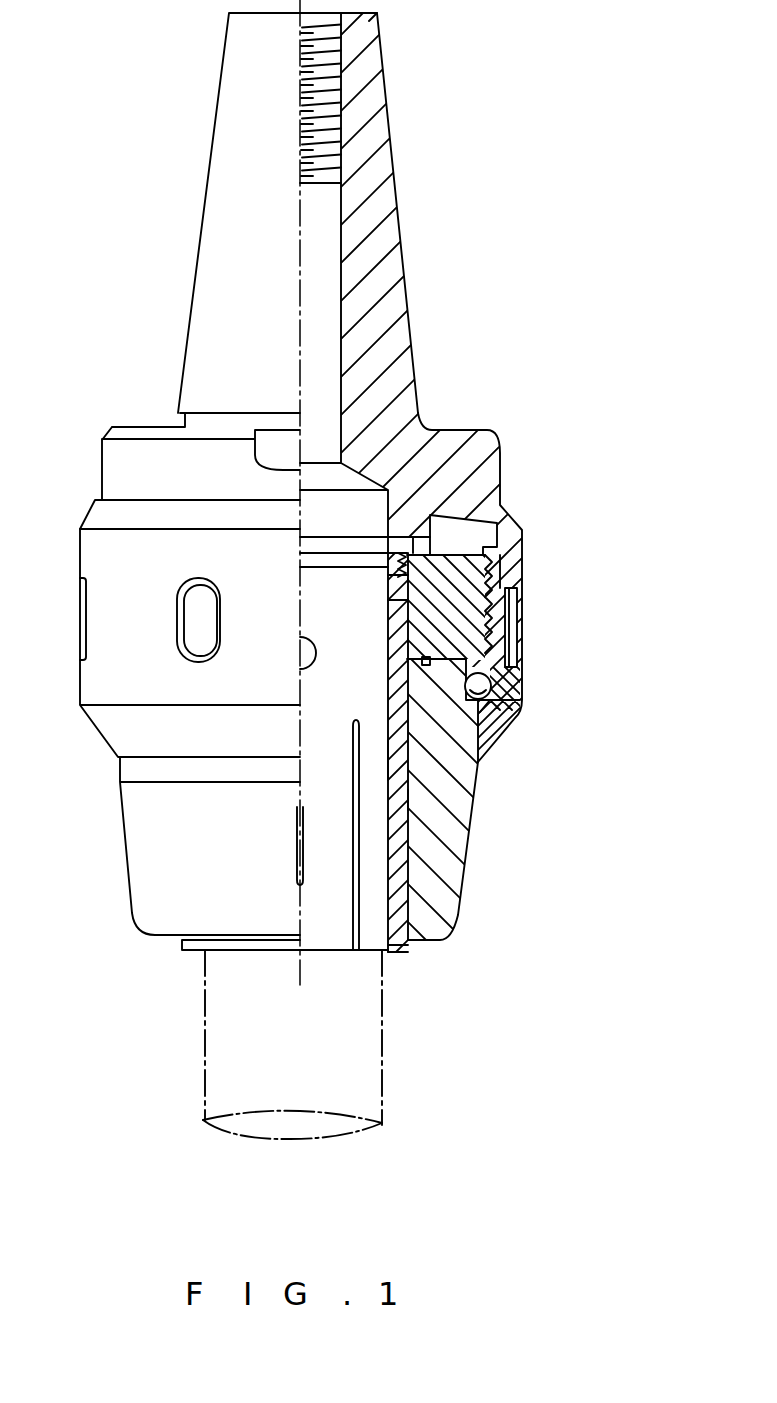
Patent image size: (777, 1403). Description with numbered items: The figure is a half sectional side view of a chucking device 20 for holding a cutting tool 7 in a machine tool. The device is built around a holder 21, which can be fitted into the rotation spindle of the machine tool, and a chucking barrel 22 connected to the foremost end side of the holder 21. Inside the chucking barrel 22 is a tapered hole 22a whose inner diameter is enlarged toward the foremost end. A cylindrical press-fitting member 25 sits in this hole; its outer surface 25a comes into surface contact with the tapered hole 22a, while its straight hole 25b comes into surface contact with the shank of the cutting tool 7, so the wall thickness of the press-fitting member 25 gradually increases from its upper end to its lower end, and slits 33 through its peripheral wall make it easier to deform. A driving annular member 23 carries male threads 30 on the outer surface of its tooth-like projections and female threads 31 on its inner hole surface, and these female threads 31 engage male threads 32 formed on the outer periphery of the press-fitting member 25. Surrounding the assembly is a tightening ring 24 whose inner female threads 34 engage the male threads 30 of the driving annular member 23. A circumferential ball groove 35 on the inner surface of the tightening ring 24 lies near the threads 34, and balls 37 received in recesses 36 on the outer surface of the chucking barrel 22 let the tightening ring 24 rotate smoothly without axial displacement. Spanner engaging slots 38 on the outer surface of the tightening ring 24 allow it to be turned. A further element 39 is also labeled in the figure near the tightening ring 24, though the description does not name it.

The cutting tool 7 is at (363, 1034).
The chucking device 20 is at (131, 390).
The holder 21 is at (404, 232).
The chucking barrel 22 is at (472, 852).
The tapered hole 22a is at (400, 760).
The driving annular member 23 is at (490, 568).
The tightening ring 24 is at (527, 540).
The press-fitting member 25 is at (400, 875).
The outer surface 25a is at (410, 798).
The straight hole 25b is at (378, 938).
The male threads 30 is at (518, 640).
The female threads 31 is at (396, 610).
The male threads 32 is at (392, 582).
The slits 33 is at (357, 826).
The female threads 34 is at (503, 600).
The ball groove 35 is at (507, 715).
The recesses 36 is at (490, 725).
The balls 37 is at (465, 686).
The spanner engaging slot 38 is at (512, 622).
The spring ring 39 is at (412, 548).